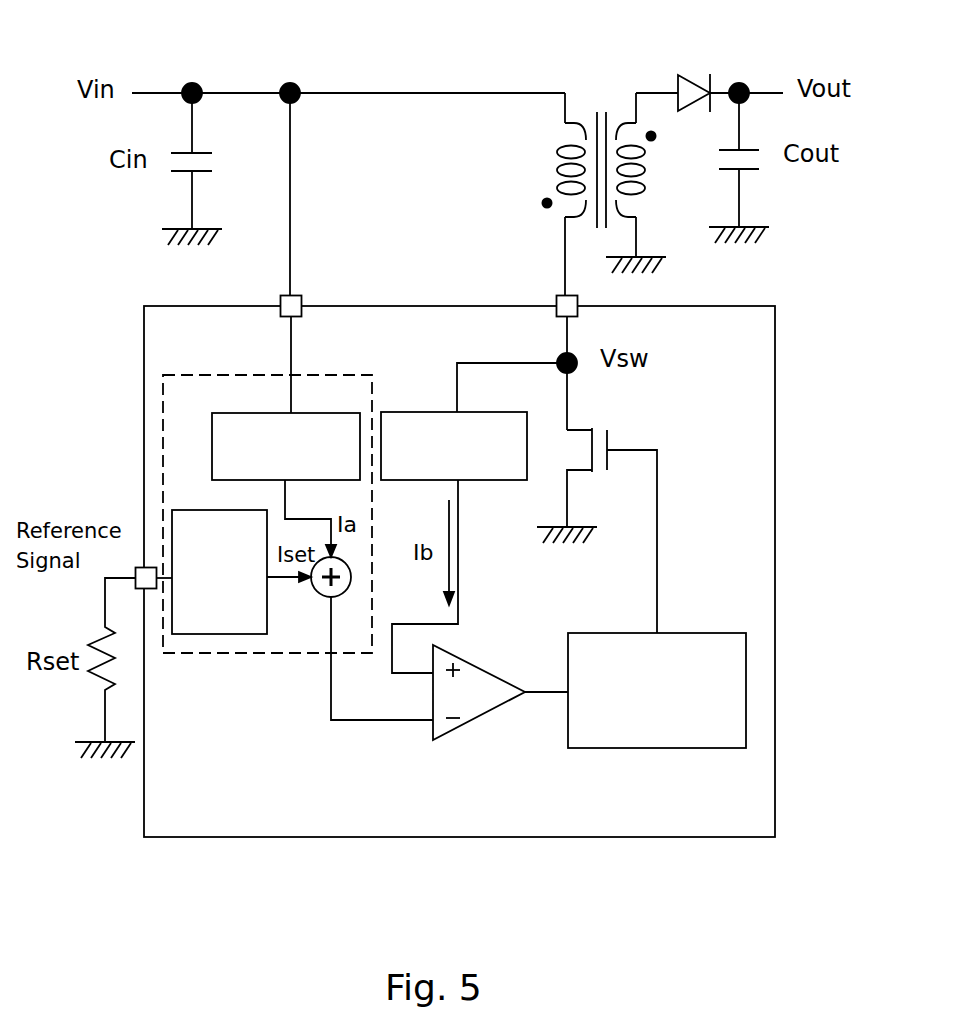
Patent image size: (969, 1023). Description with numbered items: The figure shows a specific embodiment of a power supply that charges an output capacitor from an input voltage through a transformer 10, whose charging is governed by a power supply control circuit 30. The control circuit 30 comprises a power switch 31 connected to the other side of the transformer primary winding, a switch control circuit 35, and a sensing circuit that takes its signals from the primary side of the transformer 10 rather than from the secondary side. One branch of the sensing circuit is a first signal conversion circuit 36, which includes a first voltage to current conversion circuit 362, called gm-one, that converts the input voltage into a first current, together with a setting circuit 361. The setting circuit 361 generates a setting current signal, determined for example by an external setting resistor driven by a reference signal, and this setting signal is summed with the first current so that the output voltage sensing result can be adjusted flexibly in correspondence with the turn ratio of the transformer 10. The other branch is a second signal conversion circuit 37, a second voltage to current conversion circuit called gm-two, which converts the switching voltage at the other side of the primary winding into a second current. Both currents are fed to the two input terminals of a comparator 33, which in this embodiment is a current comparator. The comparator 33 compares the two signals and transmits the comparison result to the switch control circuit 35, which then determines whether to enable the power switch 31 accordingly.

The transformer 10 is at (614, 85).
The power supply control circuit 30 is at (775, 417).
The power switch 31 is at (573, 477).
The comparator 33 is at (492, 710).
The switch control circuit 35 is at (682, 732).
The first signal conversion circuit 36 is at (243, 374).
The second signal conversion circuit 37 is at (493, 459).
The setting circuit 361 is at (200, 612).
The first voltage to current conversion circuit 362 is at (314, 461).